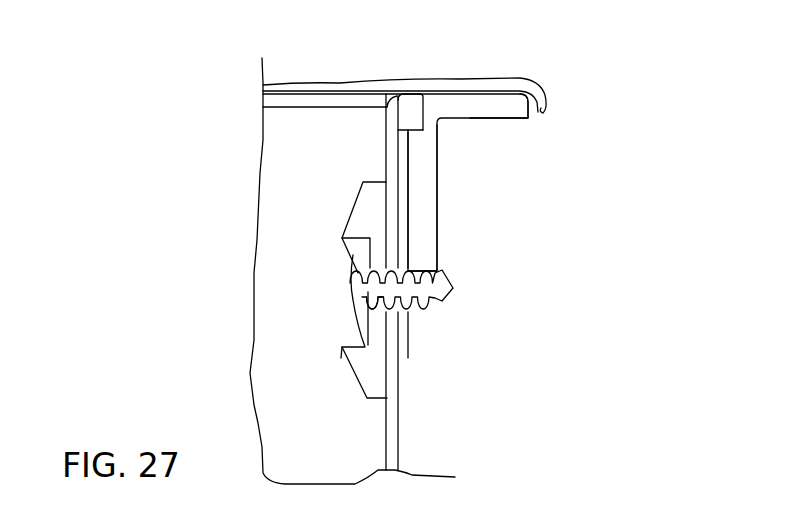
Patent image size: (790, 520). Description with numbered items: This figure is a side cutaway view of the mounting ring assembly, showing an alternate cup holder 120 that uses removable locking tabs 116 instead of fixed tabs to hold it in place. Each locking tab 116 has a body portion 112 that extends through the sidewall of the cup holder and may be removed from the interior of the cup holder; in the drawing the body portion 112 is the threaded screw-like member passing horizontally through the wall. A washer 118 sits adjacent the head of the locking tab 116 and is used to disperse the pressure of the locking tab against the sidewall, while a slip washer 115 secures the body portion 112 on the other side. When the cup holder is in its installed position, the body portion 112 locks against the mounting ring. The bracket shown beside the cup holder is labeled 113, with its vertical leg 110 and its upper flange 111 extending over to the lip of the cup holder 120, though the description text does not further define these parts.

The leg of bracket 110 is at (428, 182).
The flange of bracket 111 is at (503, 112).
The body portion 112 is at (432, 331).
The bracket 113 is at (472, 182).
The slip washer 115 is at (401, 344).
The locking tab 116 is at (293, 152).
The washer 118 is at (362, 373).
The cup holder 120 is at (488, 80).